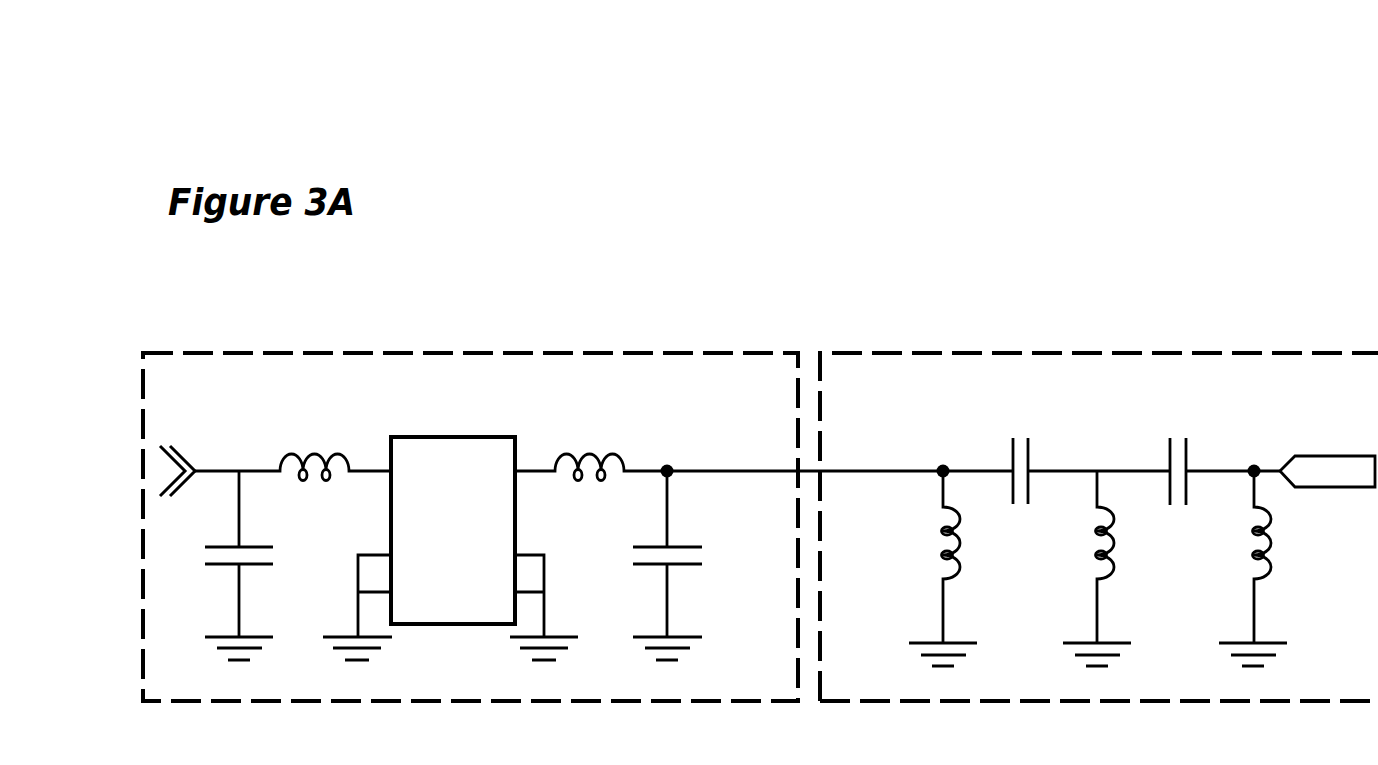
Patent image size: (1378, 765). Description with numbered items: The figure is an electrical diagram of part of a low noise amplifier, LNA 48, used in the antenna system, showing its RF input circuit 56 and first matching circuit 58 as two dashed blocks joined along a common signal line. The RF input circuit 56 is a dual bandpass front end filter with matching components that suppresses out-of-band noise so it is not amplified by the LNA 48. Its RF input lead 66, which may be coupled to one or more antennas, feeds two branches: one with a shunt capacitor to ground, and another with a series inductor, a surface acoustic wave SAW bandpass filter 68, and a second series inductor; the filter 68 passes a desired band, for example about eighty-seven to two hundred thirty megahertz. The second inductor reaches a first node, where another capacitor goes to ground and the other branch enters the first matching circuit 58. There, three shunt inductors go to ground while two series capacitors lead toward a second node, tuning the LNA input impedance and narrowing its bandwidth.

The LNA 48 is at (795, 222).
The RF input circuit 56 is at (525, 345).
The first matching circuit 58 is at (1127, 346).
The RF input lead 66 is at (172, 436).
The SAW bandpass filter 68 is at (477, 437).